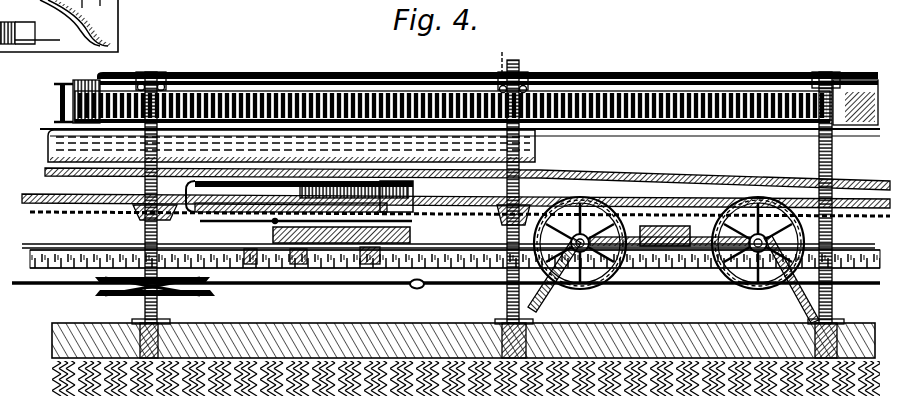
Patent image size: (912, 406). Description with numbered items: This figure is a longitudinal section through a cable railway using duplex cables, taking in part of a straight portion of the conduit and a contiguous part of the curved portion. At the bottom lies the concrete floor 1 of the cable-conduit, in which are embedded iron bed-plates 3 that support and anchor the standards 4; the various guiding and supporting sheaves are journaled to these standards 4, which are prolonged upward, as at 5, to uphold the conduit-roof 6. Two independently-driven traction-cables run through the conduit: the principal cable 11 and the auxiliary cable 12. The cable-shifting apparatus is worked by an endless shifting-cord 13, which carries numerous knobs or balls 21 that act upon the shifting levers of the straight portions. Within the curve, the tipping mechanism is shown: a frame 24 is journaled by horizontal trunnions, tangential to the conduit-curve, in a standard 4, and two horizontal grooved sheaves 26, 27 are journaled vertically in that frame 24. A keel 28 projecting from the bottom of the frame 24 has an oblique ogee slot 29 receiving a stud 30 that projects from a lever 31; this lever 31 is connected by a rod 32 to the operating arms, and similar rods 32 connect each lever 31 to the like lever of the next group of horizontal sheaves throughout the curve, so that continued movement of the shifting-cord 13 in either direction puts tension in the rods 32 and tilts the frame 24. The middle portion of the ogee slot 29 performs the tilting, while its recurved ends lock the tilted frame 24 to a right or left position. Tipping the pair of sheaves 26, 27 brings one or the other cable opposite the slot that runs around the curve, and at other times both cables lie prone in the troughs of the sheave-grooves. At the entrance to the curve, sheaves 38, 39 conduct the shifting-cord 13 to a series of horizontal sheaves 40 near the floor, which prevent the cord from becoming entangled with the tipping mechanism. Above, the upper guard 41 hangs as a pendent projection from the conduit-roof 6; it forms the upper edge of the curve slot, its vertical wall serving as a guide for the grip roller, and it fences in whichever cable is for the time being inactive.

The concrete floor 1 is at (463, 340).
The iron bed-plates 3 is at (160, 336).
The standards 4 is at (134, 306).
The upward prolongation of standard 5 is at (144, 186).
The conduit-roof 6 is at (486, 47).
The principal cable 11 is at (670, 183).
The auxiliary cable 12 is at (36, 196).
The shifting-cord 13 is at (640, 277).
The knobs or balls 21 is at (414, 294).
The frame 24 is at (396, 222).
The horizontal grooved sheave 26 is at (385, 208).
The horizontal grooved sheave 27 is at (224, 212).
The keel 28 is at (326, 237).
The ogee slot 29 is at (370, 265).
The stud 30 is at (297, 266).
The lever 31 is at (259, 266).
The rod 32 is at (76, 244).
The sheave 38 is at (758, 250).
The sheave 39 is at (580, 254).
The horizontal sheaves 40 is at (204, 294).
The upper guard 41 is at (312, 152).